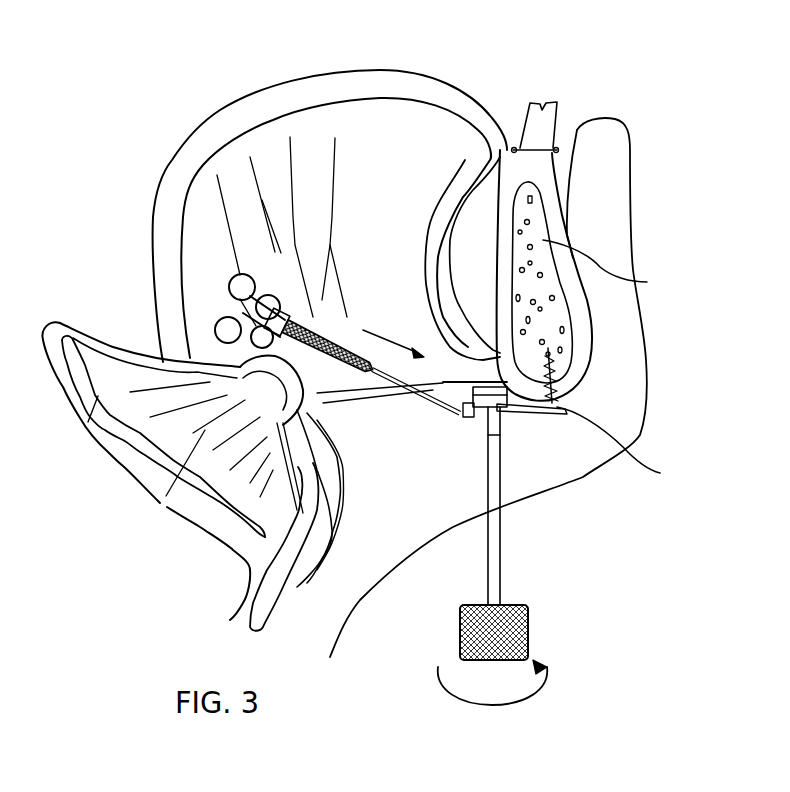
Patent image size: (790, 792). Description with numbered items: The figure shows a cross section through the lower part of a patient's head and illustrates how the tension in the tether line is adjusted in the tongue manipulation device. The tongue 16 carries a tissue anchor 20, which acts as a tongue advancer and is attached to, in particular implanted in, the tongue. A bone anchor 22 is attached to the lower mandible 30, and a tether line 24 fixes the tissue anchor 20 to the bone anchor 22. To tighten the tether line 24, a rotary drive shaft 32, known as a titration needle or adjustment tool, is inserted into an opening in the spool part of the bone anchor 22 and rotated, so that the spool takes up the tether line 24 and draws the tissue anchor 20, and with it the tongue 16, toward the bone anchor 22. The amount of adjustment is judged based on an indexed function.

The tongue 16 is at (307, 90).
The tissue anchor 20 is at (232, 297).
The bone anchor 22 is at (660, 473).
The tether line 24 is at (430, 382).
The lower mandible 30 is at (647, 282).
The rotary drive shaft 32 is at (509, 561).